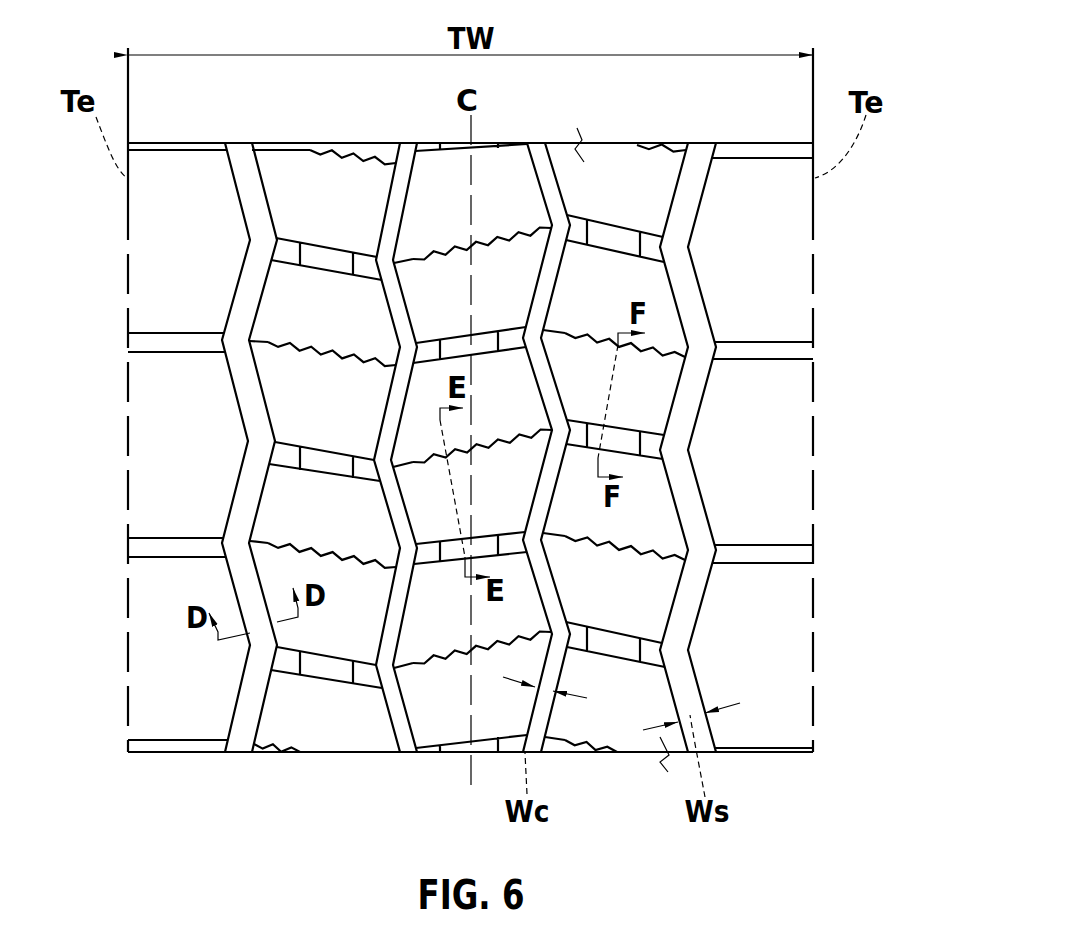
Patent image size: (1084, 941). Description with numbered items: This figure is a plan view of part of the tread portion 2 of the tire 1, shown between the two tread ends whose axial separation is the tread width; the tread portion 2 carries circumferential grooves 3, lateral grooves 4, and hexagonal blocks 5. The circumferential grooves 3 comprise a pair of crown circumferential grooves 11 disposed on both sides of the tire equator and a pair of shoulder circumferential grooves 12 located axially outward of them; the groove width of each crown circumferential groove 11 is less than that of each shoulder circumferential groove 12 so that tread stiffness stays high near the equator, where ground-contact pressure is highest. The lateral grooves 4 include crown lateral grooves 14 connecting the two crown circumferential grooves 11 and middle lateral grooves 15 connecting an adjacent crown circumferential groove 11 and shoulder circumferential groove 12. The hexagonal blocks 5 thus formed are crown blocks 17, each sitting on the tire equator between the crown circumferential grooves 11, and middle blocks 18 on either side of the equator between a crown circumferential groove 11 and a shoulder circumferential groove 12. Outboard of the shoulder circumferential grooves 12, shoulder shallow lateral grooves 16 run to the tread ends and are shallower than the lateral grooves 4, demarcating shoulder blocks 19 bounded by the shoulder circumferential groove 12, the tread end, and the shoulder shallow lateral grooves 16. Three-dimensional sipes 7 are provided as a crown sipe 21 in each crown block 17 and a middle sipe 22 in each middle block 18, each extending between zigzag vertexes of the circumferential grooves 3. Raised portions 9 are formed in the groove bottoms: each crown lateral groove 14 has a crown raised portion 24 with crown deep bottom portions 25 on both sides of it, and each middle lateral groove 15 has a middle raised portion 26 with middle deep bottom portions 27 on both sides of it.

The tire 1 is at (900, 82).
The tread portion 2 is at (832, 80).
The circumferential grooves 3 is at (717, 137).
The lateral grooves 4 is at (263, 438).
The hexagonal blocks 5 is at (253, 510).
The three-dimensional sipes 7 is at (322, 342).
The raised portions 9 is at (303, 677).
The crown circumferential grooves 11 is at (403, 175).
The shoulder circumferential grooves 12 is at (241, 167).
The crown lateral grooves 14 is at (696, 277).
The middle lateral grooves 15 is at (620, 441).
The shoulder shallow lateral grooves 16 is at (767, 350).
The crown blocks 17 is at (513, 257).
The middle blocks 18 is at (283, 568).
The shoulder blocks 19 is at (172, 681).
The crown sipe 21 is at (423, 263).
The middle sipe 22 is at (272, 340).
The crown raised portion 24 is at (452, 556).
The crown deep bottom portions 25 is at (430, 556).
The middle raised portion 26 is at (330, 665).
The middle deep bottom portions 27 is at (290, 656).